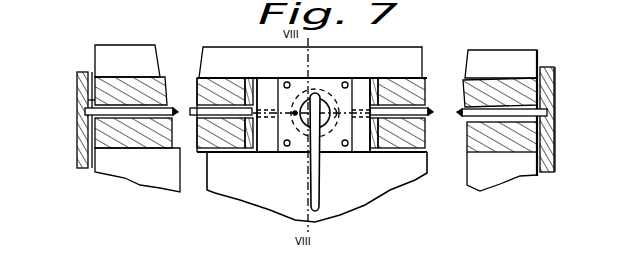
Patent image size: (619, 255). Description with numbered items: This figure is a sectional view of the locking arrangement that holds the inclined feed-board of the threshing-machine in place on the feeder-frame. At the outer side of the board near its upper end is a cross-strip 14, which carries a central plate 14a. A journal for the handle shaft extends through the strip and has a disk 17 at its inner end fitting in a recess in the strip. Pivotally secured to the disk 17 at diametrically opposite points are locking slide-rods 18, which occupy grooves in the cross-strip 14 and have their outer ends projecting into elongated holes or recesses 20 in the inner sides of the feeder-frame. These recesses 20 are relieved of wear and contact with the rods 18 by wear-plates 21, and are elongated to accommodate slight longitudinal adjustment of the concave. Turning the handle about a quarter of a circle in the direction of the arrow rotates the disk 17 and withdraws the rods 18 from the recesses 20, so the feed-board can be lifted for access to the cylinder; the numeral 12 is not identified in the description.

The wall 12 is at (587, 119).
The cross-strip 14 is at (500, 120).
The central plate 14a is at (327, 82).
The disk 17 is at (385, 165).
The locking slide-rods 18 is at (177, 114).
The elongated holes or recesses 20 is at (85, 119).
The wear-plates 21 is at (80, 140).